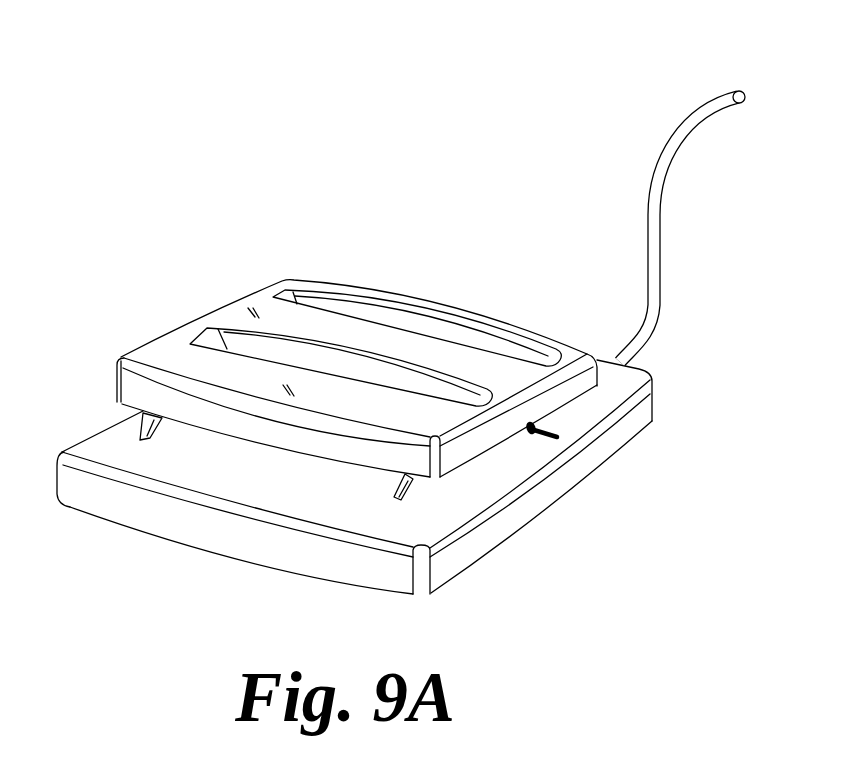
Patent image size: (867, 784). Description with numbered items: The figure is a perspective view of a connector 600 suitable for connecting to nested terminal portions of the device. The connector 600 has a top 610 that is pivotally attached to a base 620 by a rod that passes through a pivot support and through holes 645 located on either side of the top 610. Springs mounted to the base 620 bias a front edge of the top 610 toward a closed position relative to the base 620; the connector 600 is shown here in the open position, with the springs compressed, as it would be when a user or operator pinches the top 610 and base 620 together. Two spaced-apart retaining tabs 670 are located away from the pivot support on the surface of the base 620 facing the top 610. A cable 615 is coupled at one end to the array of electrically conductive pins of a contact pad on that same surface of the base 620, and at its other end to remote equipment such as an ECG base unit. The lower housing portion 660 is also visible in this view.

The connector 600 is at (243, 91).
The top 610 is at (505, 322).
The cable 615 is at (668, 163).
The base 620 is at (640, 421).
The holes 645 is at (166, 311).
The base housing front 660 is at (200, 460).
The retaining tabs 670 is at (142, 414).